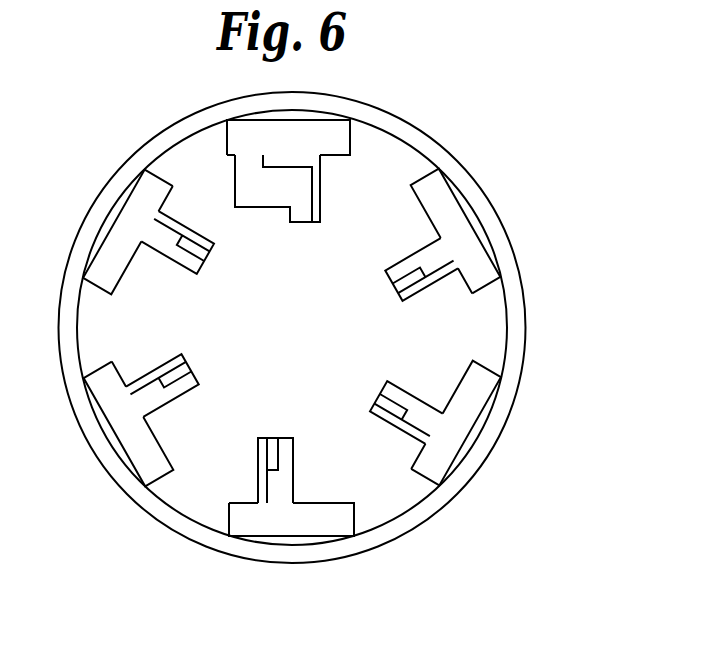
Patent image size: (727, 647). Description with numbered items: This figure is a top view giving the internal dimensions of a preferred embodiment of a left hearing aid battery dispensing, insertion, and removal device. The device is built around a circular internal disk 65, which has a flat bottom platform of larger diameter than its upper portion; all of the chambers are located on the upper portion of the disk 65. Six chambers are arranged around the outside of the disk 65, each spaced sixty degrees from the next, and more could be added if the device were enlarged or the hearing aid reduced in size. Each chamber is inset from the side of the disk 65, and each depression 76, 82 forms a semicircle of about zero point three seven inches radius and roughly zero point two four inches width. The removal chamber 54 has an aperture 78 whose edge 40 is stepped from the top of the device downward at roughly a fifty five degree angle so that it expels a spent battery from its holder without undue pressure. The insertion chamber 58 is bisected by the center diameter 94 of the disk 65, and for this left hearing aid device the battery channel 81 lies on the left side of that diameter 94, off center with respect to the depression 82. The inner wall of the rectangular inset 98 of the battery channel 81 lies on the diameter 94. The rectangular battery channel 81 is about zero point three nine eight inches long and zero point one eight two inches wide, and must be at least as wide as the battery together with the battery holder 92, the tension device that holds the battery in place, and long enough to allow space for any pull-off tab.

The battery removal chamber 54 is at (434, 135).
The insertion chamber 58 is at (515, 252).
The depression 76 is at (248, 140).
The edge 40 is at (272, 153).
The aperture 78 is at (265, 192).
The depression 82 is at (475, 193).
The center diameter 94 is at (355, 278).
The battery channel 81 is at (433, 265).
The rectangular inset 98 is at (424, 282).
The internal disk 65 is at (447, 343).
The battery holder 92 is at (435, 427).